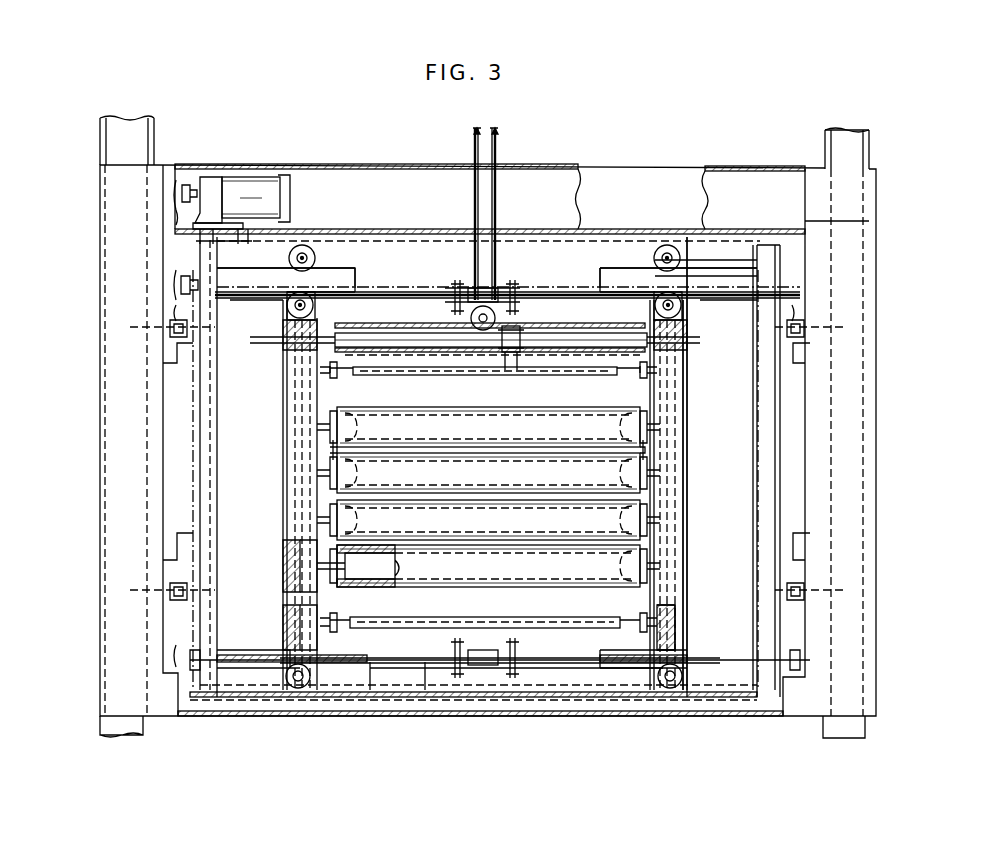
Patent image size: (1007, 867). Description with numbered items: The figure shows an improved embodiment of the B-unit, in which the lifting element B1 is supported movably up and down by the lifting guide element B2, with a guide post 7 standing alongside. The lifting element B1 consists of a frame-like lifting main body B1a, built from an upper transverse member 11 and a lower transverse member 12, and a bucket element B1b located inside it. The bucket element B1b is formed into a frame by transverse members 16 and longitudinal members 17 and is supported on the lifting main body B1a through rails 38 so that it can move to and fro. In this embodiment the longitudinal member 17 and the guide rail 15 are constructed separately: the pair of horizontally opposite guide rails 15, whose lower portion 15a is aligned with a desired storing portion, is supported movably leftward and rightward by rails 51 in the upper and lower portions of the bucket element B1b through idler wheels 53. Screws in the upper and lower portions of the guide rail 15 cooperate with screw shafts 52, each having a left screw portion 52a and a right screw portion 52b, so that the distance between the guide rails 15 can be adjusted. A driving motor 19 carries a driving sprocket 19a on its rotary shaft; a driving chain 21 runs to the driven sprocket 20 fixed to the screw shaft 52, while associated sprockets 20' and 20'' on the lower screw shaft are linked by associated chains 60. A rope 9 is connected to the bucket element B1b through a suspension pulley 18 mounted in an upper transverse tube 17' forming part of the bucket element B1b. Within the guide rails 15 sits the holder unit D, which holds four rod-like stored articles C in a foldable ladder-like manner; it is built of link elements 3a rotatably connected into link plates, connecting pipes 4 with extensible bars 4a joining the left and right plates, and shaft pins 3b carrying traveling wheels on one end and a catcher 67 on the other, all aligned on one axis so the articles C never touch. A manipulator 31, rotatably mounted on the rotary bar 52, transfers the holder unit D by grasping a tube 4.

The link element 3a is at (643, 453).
The shaft pin 3b is at (326, 477).
The connecting pipe 4 is at (476, 364).
The extensible bar 4a is at (345, 368).
The guide post 7 is at (865, 155).
The rope 9 is at (497, 140).
The upper transverse member 11 is at (711, 188).
The lower transverse member 12 is at (465, 716).
The guide rail 15 is at (283, 436).
The lower portion of the guide rail 15a is at (286, 592).
The transverse member 16 is at (750, 245).
The longitudinal member 17 is at (491, 446).
The upper transverse tube 17' is at (475, 243).
The suspension pulley 18 is at (470, 355).
The driving motor 19 is at (269, 200).
The driving sprocket 19a is at (183, 185).
The driven sprocket 20 is at (119, 281).
The associated sprocket 20' is at (492, 661).
The associated sprocket 20'' is at (489, 314).
The driving chain 21 is at (183, 247).
The manipulator 31 is at (573, 310).
The rail 38 is at (181, 538).
The rail 51 is at (717, 265).
The screw shaft 52 is at (545, 290).
The left screw portion 52a is at (360, 270).
The right screw portion 52b is at (625, 295).
The idler wheel 53 is at (304, 243).
The associated chain 60 is at (196, 456).
The catcher 67 is at (393, 575).
The lifting element B1 is at (876, 185).
The lifting main body B1a is at (813, 205).
The bucket element B1b is at (771, 282).
The lifting guide element B2 is at (99, 122).
The rod-like stored article C is at (660, 540).
The holder unit D is at (555, 642).